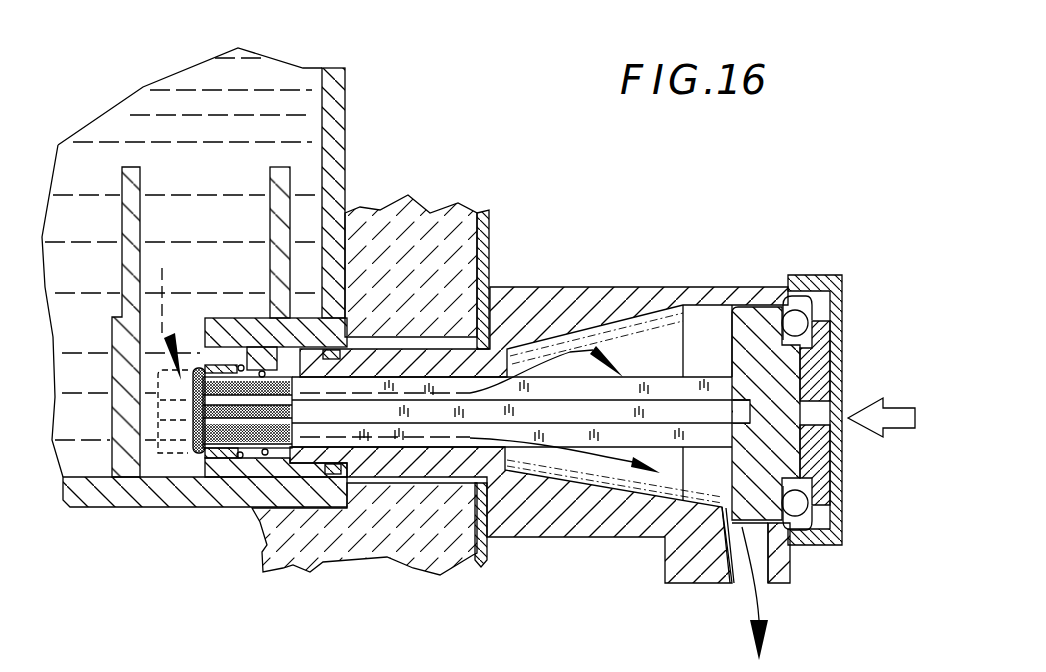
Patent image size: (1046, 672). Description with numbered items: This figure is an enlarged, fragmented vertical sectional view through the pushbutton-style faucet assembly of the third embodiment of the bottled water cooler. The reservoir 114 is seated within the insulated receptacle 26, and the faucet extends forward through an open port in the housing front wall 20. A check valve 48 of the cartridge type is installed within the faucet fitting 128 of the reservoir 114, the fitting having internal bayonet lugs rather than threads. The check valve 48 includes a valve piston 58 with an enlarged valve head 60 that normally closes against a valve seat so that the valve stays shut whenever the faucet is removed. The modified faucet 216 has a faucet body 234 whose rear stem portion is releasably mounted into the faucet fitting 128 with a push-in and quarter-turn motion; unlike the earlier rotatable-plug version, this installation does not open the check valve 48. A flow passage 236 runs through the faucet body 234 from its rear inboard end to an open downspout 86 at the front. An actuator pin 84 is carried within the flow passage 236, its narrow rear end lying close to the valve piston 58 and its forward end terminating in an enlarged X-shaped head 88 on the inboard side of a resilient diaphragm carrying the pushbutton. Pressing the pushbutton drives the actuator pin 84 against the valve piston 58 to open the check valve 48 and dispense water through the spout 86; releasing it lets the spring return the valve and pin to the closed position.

The reservoir 114 is at (347, 80).
The insulated receptacle 26 is at (378, 223).
The front wall 20 is at (490, 257).
The actuator pin 84 is at (472, 420).
The faucet body 234 is at (567, 345).
The faucet 216 is at (695, 268).
The X-shaped head 88 is at (760, 340).
The valve head 60 is at (186, 440).
The check valve 48 is at (211, 482).
The valve piston 58 is at (267, 448).
The faucet fitting 128 is at (307, 494).
The flow passage 236 is at (572, 490).
The downspout 86 is at (765, 580).